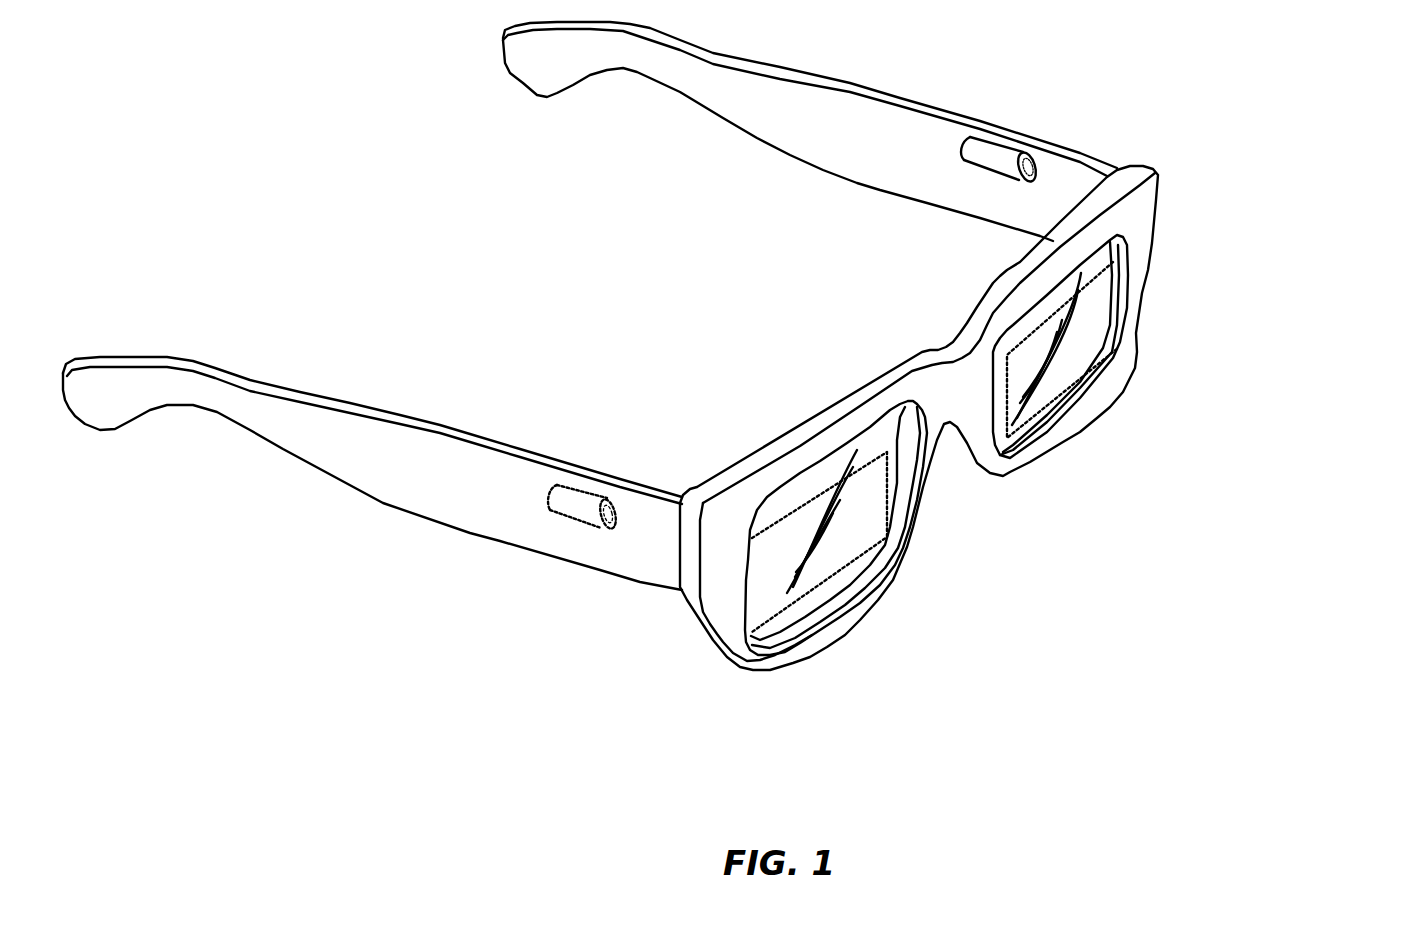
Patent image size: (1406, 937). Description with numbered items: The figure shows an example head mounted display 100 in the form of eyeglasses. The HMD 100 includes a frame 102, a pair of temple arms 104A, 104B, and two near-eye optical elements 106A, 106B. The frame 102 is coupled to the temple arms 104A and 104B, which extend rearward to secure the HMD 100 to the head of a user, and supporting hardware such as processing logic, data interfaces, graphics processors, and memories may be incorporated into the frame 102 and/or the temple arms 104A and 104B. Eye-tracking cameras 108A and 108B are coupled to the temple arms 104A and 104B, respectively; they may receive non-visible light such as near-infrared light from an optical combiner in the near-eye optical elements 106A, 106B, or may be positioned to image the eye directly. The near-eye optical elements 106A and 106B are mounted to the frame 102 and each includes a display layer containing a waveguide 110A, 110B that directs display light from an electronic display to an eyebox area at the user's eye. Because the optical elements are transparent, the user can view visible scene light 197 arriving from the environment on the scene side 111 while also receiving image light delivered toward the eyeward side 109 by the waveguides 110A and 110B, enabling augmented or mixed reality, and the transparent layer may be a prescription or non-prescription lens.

The head mounted display 100 is at (1308, 148).
The frame 102 is at (966, 400).
The temple arm 104A is at (481, 505).
The temple arm 104B is at (859, 142).
The near-eye optical element 106A is at (870, 548).
The near-eye optical element 106B is at (1105, 336).
The eye-tracking camera 108A is at (572, 503).
The eye-tracking camera 108B is at (1010, 156).
The eyeward side 109 is at (740, 389).
The waveguide 110A is at (790, 608).
The waveguide 110B is at (1047, 407).
The scene side 111 is at (1094, 527).
The scene light 197 is at (1168, 406).